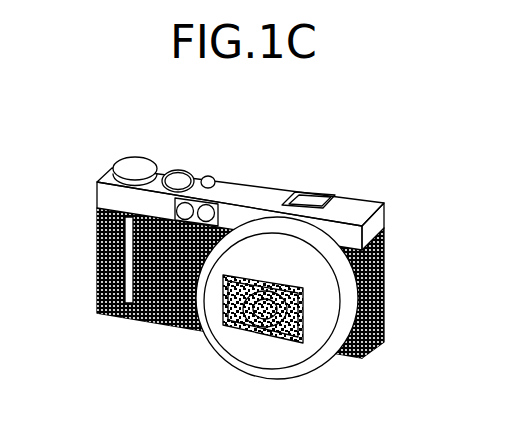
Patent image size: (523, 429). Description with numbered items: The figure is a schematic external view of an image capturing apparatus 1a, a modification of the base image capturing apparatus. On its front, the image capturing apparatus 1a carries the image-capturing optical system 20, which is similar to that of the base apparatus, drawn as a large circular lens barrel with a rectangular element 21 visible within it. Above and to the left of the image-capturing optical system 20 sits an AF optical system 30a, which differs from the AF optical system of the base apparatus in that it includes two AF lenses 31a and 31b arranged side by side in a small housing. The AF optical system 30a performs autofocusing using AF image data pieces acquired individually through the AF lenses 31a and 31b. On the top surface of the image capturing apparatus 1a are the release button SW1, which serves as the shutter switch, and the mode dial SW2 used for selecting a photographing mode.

The image capturing apparatus 1a is at (393, 266).
The release button SW1 is at (186, 172).
The mode dial SW2 is at (137, 167).
The AF optical system 30a is at (218, 212).
The AF lens 31a is at (190, 203).
The AF lens 31b is at (207, 204).
The image-capturing optical system 20 is at (302, 366).
The display / image sensor 21 is at (233, 310).